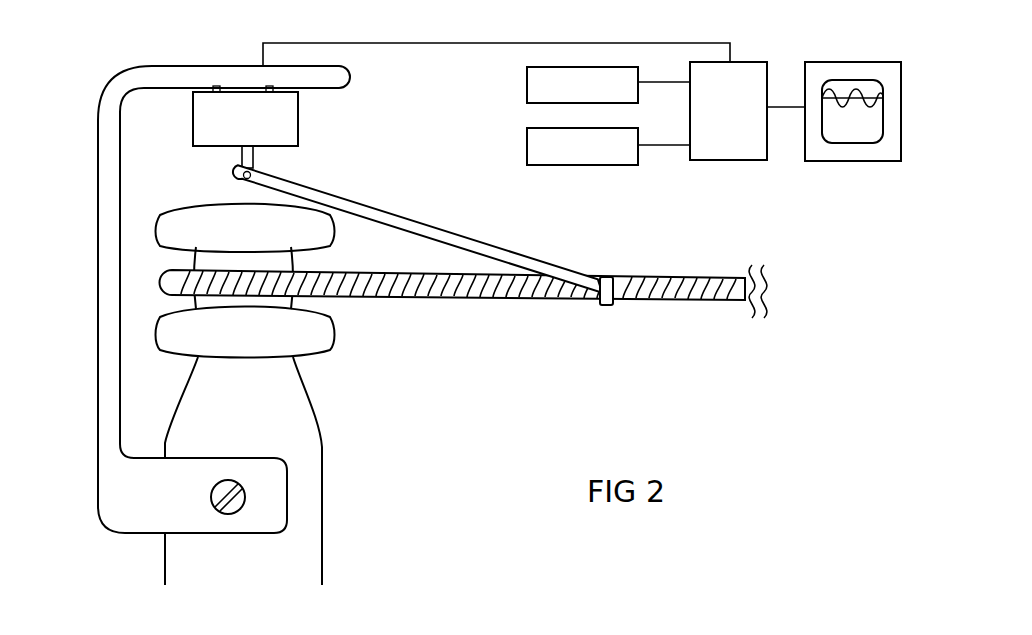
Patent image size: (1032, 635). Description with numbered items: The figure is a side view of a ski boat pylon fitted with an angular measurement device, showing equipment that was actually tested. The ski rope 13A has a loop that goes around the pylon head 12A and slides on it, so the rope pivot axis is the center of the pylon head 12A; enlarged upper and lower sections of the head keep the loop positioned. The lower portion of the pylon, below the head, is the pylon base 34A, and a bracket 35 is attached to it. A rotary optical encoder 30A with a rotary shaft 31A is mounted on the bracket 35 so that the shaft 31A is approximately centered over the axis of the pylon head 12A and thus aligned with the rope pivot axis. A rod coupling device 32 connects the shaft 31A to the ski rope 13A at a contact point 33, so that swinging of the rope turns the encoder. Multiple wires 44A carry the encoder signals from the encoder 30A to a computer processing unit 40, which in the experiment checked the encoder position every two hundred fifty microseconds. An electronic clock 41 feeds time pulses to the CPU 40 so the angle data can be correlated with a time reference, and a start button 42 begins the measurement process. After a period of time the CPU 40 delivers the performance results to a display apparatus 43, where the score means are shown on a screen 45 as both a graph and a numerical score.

The pylon head 12A is at (295, 305).
The ski rope 13A is at (462, 300).
The rotary optical encoder 30A is at (299, 113).
The rotary shaft 31A is at (254, 157).
The rod coupling device 32 is at (423, 220).
The contact point 33 is at (613, 277).
The pylon base 34A is at (322, 500).
The bracket 35 is at (98, 258).
The computer processing unit (CPU) 40 is at (750, 62).
The electronic clock 41 is at (590, 67).
The start button 42 is at (527, 147).
The display unit 43 is at (822, 62).
The wires 44A is at (395, 43).
The screen 45 is at (860, 80).